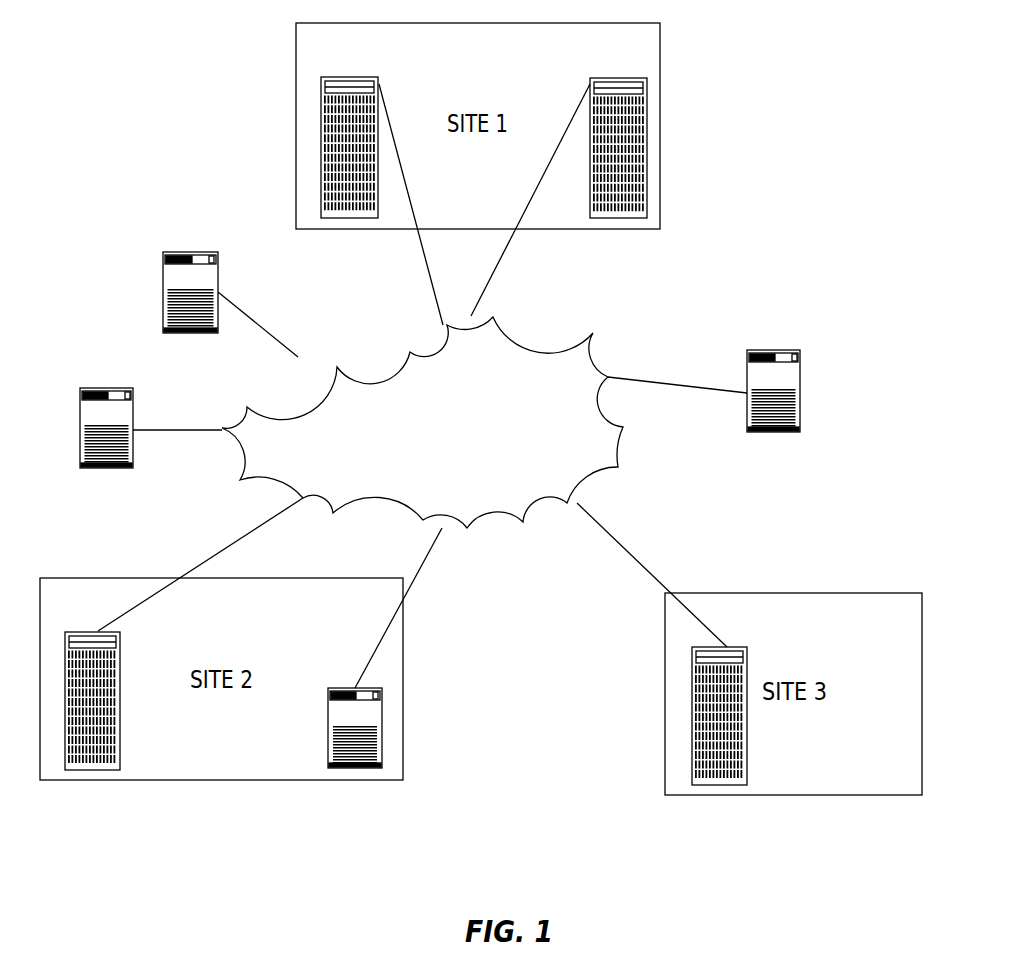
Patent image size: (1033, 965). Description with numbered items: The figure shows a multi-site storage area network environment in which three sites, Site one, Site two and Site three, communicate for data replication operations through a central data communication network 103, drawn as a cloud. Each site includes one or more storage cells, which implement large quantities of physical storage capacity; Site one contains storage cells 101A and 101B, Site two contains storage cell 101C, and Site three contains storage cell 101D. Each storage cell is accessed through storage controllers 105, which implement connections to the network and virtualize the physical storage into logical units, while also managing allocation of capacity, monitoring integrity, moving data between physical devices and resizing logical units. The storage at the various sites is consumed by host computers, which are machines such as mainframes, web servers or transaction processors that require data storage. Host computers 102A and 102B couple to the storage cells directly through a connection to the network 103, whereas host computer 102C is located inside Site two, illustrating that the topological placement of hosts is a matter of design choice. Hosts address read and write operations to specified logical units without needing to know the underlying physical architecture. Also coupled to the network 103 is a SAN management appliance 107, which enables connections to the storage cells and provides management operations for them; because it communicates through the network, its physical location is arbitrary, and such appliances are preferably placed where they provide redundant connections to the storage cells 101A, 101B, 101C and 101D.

The storage cell 101A is at (338, 145).
The storage cell 101B is at (647, 122).
The storage cell 101C is at (98, 772).
The storage cell 101D is at (692, 727).
The host computer 102A is at (218, 292).
The host computer 102B is at (800, 395).
The host computer 102C is at (382, 733).
The data communication network 103 is at (593, 333).
The storage controller 105 is at (350, 85).
The SAN management appliance 107 is at (80, 418).